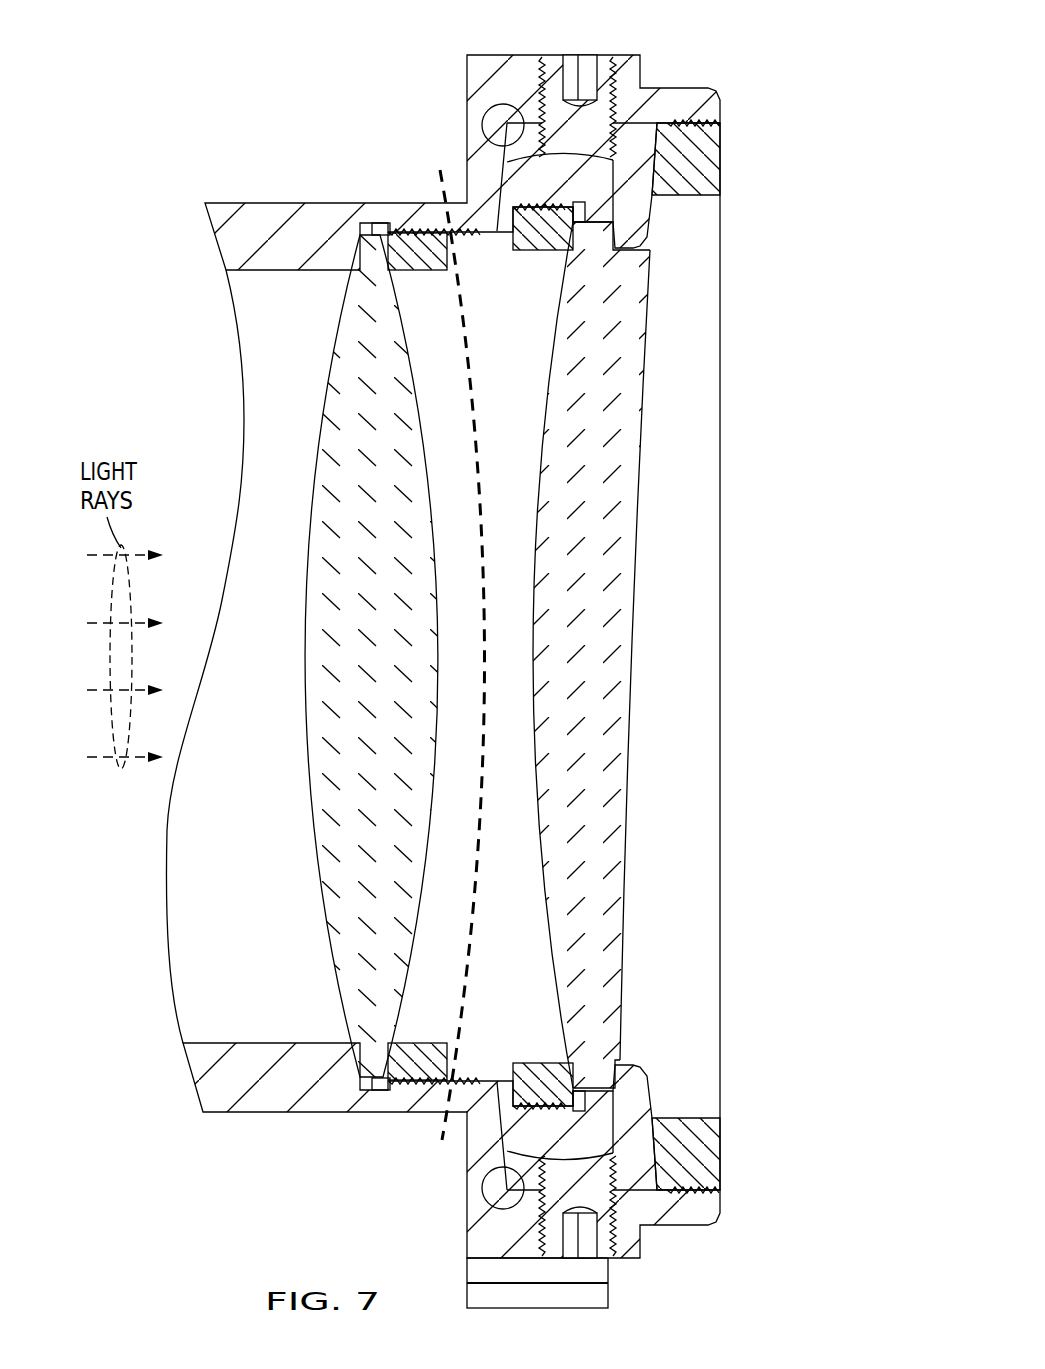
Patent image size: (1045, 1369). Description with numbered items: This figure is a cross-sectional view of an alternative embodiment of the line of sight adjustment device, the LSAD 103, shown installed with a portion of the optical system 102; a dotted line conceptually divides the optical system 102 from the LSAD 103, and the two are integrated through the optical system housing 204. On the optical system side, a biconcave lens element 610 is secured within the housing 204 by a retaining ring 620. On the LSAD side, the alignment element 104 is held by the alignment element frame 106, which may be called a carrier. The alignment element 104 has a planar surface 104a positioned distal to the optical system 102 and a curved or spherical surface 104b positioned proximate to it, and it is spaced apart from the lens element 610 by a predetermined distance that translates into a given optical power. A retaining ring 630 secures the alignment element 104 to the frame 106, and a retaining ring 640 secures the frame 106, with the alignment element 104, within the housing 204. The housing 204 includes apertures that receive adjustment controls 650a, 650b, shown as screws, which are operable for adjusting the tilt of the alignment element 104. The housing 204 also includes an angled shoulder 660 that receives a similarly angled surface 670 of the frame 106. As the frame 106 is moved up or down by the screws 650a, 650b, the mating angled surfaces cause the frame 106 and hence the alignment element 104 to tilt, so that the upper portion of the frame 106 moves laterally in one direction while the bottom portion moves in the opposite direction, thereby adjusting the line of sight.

The optical system 102 is at (314, 128).
The LSAD 103 is at (688, 1270).
The alignment element 104 is at (600, 673).
The planar surface 104a is at (632, 836).
The curved or spherical surface 104b is at (540, 885).
The alignment element frame 106 is at (623, 207).
The optical system housing 204 is at (276, 210).
The biconcave lens element 610 is at (392, 673).
The retaining ring 620 is at (420, 262).
The retaining ring 630 is at (540, 255).
The retaining ring 640 is at (712, 158).
The adjustment control 650a is at (607, 62).
The adjustment control 650b is at (605, 1262).
The angled shoulder 660 is at (482, 118).
The angled surface 670 is at (513, 178).